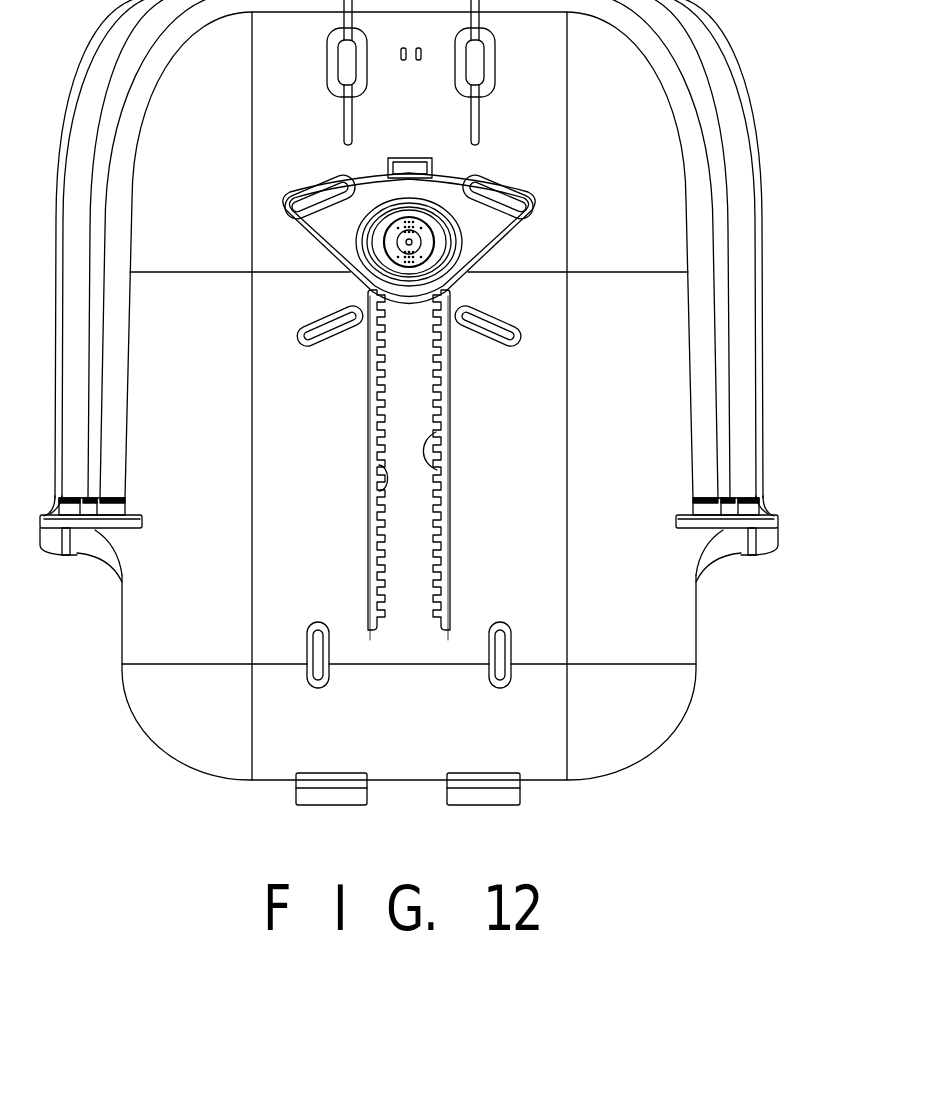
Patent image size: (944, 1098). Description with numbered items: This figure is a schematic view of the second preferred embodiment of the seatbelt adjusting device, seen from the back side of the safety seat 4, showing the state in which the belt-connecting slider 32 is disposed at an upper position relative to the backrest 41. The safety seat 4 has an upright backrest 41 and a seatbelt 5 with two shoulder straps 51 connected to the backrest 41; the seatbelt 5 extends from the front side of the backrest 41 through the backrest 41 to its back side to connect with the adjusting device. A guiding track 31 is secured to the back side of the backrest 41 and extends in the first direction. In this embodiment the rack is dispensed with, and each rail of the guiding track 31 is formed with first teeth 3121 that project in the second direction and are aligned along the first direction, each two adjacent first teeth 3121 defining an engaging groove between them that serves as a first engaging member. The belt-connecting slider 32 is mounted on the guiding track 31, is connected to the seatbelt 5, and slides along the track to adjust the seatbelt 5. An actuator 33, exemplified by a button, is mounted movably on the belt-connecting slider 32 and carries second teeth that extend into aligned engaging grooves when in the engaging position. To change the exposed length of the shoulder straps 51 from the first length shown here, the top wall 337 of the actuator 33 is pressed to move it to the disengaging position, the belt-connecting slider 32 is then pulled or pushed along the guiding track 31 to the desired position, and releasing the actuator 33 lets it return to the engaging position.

The safety seat 4 is at (777, 342).
The backrest 41 is at (652, 620).
The seatbelt 5 is at (517, 172).
The shoulder straps 51 is at (330, 188).
The belt-connecting slider 32 is at (285, 230).
The actuator 33 is at (316, 234).
The top wall 337 is at (428, 232).
The guiding track 31 is at (400, 465).
The first teeth 3121 is at (383, 480).